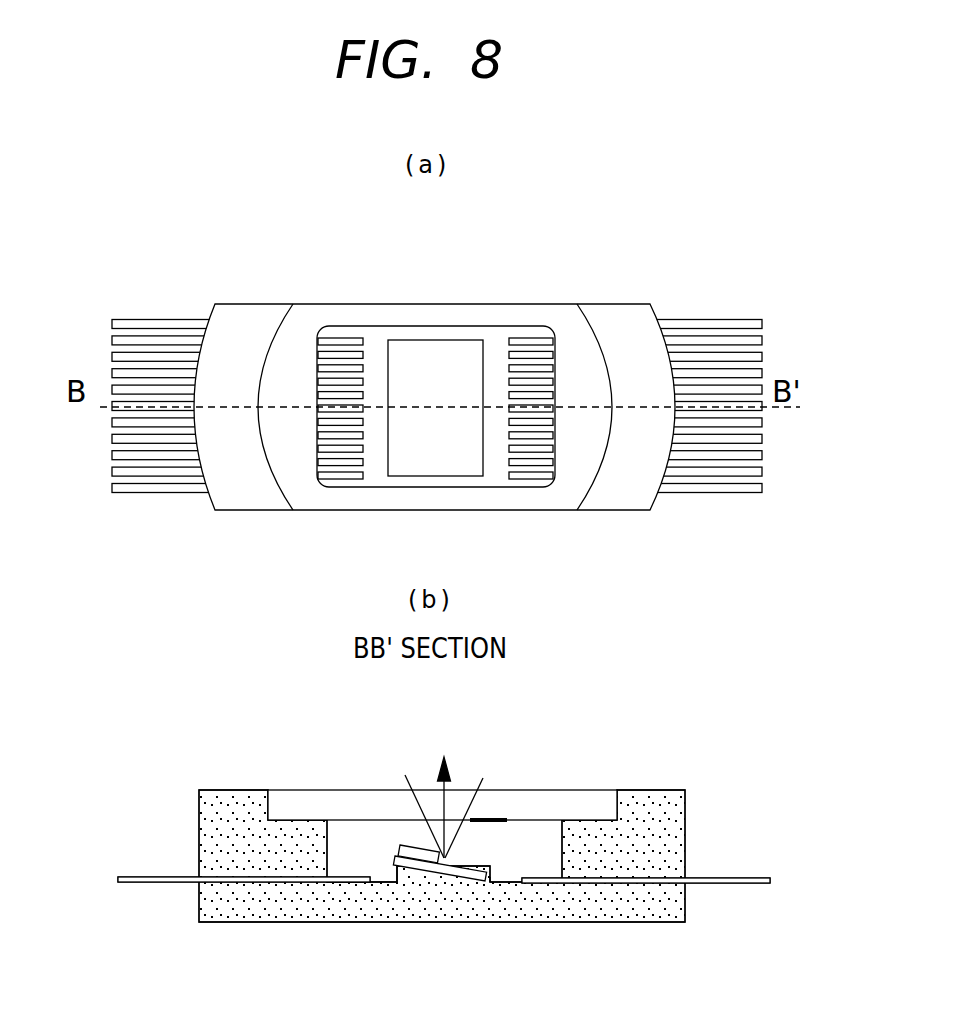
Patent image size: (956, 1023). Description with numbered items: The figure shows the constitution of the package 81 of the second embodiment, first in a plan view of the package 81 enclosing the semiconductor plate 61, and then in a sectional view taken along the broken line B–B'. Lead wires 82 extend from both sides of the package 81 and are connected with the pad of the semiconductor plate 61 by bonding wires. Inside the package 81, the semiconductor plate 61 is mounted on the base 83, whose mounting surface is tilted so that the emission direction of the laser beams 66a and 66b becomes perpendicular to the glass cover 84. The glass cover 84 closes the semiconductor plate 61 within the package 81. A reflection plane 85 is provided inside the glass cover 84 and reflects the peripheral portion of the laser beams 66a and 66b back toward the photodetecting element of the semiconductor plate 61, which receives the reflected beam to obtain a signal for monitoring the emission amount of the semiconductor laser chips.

The semiconductor plate 61 is at (393, 342).
The package 81 is at (255, 303).
The lead wires 82 is at (149, 318).
The base 83 is at (472, 880).
The glass cover 84 is at (580, 790).
The reflection plane 85 is at (502, 818).
The laser beam 66a is at (440, 767).
The laser beam 66b is at (461, 807).